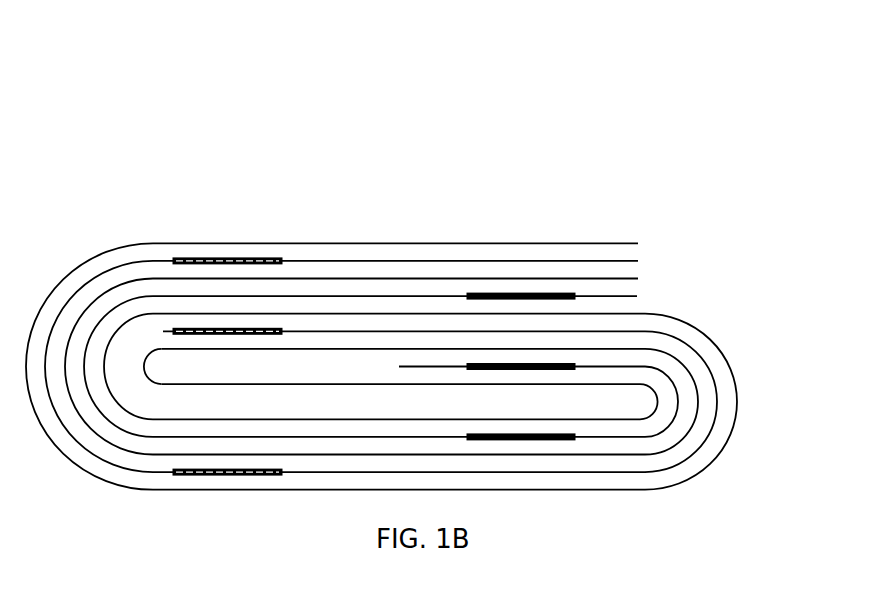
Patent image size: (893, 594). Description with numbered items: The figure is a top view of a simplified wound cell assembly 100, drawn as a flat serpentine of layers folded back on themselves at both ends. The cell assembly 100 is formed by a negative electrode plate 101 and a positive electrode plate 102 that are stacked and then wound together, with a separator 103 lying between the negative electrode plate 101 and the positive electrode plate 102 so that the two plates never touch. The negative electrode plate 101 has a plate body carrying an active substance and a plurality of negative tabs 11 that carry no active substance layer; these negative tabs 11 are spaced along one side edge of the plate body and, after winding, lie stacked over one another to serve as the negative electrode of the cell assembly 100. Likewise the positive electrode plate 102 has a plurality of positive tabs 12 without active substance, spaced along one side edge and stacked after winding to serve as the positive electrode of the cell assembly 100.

The cell assembly 100 is at (282, 54).
The negative electrode plate 101 is at (675, 403).
The positive electrode plate 102 is at (327, 332).
The separator 103 is at (612, 383).
The negative tabs 11 is at (515, 293).
The positive tabs 12 is at (226, 257).